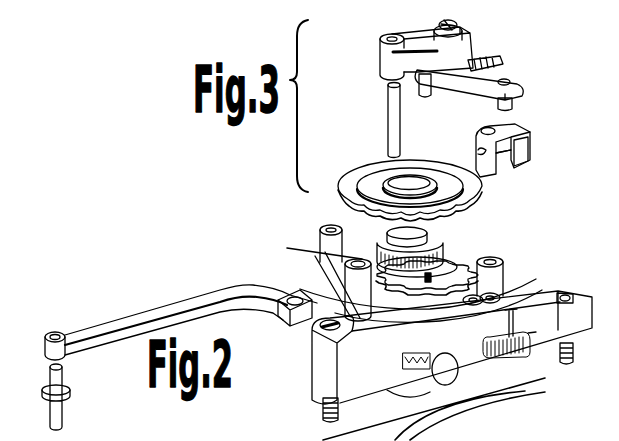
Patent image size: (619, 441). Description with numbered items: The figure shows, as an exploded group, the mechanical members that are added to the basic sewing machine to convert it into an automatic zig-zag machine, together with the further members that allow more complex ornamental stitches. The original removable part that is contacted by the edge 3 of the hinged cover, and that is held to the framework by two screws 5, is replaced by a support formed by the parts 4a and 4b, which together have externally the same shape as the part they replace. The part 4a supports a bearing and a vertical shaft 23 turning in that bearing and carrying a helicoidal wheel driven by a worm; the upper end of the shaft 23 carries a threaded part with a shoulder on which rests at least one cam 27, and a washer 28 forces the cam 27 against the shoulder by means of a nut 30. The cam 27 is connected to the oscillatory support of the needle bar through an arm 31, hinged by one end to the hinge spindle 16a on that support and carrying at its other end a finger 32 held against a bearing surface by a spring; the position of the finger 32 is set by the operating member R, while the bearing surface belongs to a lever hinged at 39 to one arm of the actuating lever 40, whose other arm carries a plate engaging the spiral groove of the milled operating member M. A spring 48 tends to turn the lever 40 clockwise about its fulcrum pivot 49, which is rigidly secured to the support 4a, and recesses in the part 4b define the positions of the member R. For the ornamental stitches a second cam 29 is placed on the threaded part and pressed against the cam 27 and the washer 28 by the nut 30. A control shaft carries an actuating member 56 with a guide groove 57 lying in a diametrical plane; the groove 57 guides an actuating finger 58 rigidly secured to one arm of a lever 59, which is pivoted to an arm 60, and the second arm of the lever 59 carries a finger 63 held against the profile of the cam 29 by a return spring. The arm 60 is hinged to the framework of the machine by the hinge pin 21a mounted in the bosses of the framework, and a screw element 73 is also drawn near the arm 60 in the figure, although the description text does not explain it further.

In FIG. 2, the edge of the cover 3 is at (520, 391).
In FIG. 2, the support part 4a is at (452, 347).
In FIG. 2, the support part 4b is at (540, 293).
In FIG. 2, the screws 5 is at (322, 410).
In FIG. 2, the hinge spindle 16a is at (59, 398).
In FIG. 3, the hinge pin 21a is at (390, 128).
In FIG. 2, the vertical shaft 23 is at (424, 233).
In FIG. 2, the cam 27 is at (492, 259).
In FIG. 2, the washer 28 is at (452, 263).
In FIG. 3, the cam 29 is at (369, 166).
In FIG. 2, the nut 30 is at (461, 249).
In FIG. 2, the arm 31 is at (218, 294).
In FIG. 2, the finger 32 is at (283, 320).
In FIG. 2, the hinge of lever 38 39 is at (326, 228).
In FIG. 2, the actuating lever 40 is at (421, 304).
In FIG. 2, the spring 48 is at (303, 257).
In FIG. 2, the fulcrum pivot 49 is at (362, 262).
In FIG. 3, the actuating member 56 is at (512, 132).
In FIG. 3, the guide groove 57 is at (523, 160).
In FIG. 3, the actuating finger 58 is at (512, 105).
In FIG. 3, the lever 59 is at (470, 88).
In FIG. 3, the arm 60 is at (418, 40).
In FIG. 3, the finger 63 is at (430, 98).
In FIG. 3, the screw 73 is at (478, 48).